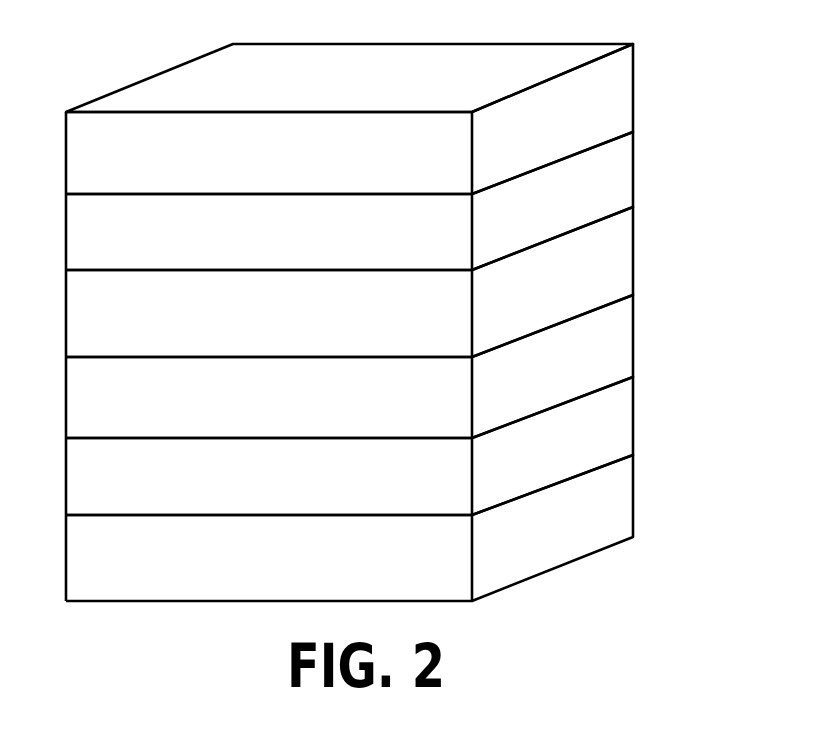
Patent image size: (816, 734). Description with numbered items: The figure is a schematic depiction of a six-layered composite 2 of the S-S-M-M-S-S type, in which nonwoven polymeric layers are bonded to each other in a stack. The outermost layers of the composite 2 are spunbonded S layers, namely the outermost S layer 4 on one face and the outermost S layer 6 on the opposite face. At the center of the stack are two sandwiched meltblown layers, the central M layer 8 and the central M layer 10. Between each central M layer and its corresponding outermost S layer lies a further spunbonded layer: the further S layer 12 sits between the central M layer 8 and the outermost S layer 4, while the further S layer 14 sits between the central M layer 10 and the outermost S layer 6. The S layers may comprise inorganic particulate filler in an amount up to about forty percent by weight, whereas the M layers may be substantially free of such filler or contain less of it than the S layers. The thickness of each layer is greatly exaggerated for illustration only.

The composite 2 is at (117, 65).
The outermost S layer 4 is at (613, 97).
The further S layer 12 is at (613, 178).
The central M layer 8 is at (613, 257).
The central M layer 10 is at (611, 340).
The further S layer 14 is at (611, 423).
The outermost S layer 6 is at (611, 500).